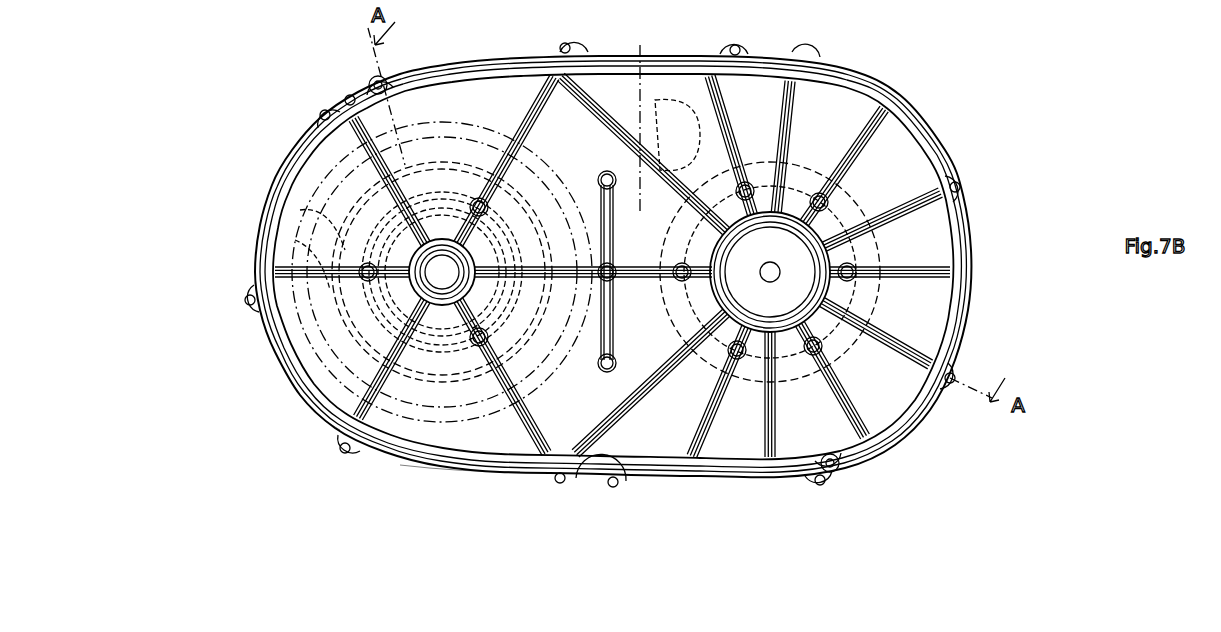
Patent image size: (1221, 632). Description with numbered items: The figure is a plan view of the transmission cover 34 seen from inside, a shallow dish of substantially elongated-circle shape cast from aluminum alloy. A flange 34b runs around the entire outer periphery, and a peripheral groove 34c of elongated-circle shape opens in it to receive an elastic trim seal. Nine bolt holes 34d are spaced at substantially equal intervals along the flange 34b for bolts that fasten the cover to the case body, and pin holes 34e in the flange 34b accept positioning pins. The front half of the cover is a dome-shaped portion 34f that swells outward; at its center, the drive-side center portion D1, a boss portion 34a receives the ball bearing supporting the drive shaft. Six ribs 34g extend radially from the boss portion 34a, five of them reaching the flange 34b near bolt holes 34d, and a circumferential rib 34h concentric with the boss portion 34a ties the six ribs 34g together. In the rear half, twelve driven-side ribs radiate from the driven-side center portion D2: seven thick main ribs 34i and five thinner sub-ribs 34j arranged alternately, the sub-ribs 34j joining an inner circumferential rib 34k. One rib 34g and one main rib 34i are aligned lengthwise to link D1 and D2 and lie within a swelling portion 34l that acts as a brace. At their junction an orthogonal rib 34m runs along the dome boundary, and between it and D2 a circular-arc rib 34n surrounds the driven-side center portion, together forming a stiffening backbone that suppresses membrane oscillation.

The transmission cover 34 is at (1004, 95).
The boss portion 34a is at (265, 262).
The flange 34b is at (440, 478).
The peripheral groove 34c is at (318, 405).
The bolt holes 34d is at (318, 115).
The pin holes 34e is at (370, 79).
The dome-shaped portion 34f is at (330, 235).
The ribs 34g is at (445, 192).
The circumferential rib 34h is at (325, 228).
The main ribs 34i is at (612, 128).
The sub-ribs 34j is at (745, 62).
The circumferential rib 34k is at (850, 215).
The swelling portion 34l is at (640, 55).
The orthogonal rib 34m is at (605, 372).
The circular-arc rib 34n is at (672, 180).
The drive-side center portion D1 is at (365, 330).
The driven-side center portion D2 is at (878, 255).